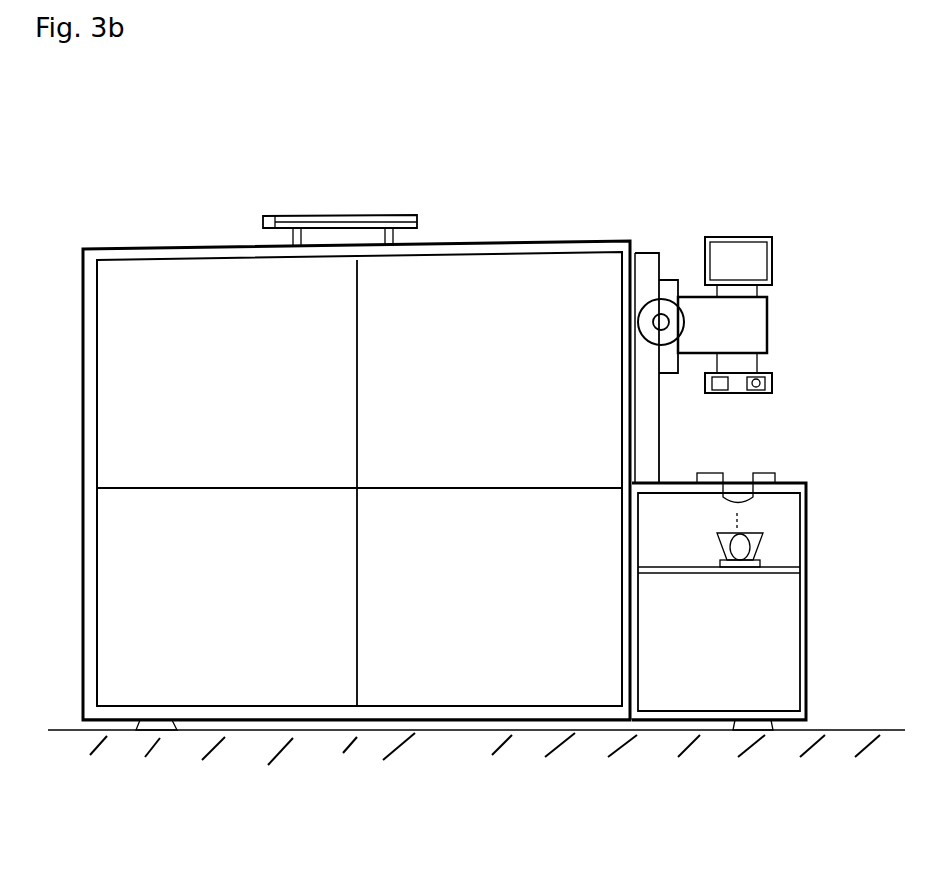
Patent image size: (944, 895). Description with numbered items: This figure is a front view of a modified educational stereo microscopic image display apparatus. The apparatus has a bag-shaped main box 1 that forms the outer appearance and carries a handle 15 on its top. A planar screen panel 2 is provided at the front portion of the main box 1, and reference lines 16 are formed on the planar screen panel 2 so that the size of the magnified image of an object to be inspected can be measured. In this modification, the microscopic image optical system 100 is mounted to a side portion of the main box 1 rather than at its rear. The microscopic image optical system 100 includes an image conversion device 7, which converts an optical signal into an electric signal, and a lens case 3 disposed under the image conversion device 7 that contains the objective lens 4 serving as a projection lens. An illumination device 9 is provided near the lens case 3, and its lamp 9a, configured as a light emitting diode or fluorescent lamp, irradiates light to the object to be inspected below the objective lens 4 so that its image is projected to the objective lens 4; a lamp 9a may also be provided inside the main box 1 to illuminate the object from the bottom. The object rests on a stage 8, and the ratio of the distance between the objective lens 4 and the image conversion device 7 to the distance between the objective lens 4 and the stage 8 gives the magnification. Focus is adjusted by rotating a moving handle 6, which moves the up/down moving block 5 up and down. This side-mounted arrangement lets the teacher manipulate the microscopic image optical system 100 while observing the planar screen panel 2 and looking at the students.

The main box 1 is at (493, 243).
The planar screen panel 2 is at (477, 672).
The lens case 3 is at (790, 343).
The objective lens 4 is at (738, 395).
The up/down moving block 5 is at (675, 375).
The moving handle 6 is at (645, 332).
The image conversion device 7 is at (760, 253).
The stage 8 is at (765, 470).
The illumination device 9 is at (787, 378).
The lamp 9a is at (770, 537).
The handle 15 is at (347, 220).
The reference lines 16 is at (356, 490).
The microscopic image optical system 100 is at (744, 322).